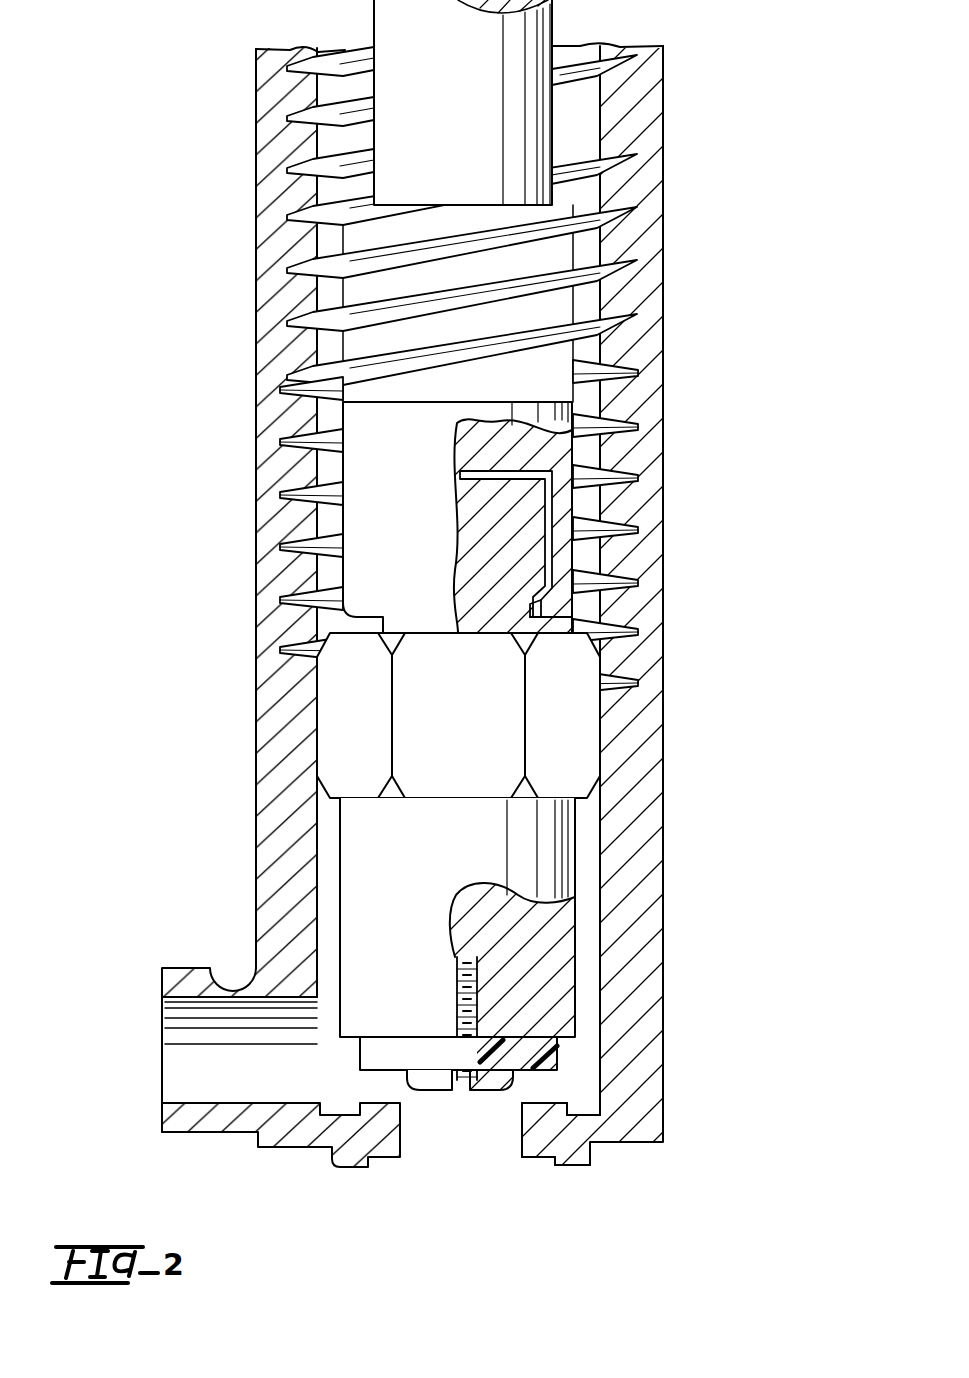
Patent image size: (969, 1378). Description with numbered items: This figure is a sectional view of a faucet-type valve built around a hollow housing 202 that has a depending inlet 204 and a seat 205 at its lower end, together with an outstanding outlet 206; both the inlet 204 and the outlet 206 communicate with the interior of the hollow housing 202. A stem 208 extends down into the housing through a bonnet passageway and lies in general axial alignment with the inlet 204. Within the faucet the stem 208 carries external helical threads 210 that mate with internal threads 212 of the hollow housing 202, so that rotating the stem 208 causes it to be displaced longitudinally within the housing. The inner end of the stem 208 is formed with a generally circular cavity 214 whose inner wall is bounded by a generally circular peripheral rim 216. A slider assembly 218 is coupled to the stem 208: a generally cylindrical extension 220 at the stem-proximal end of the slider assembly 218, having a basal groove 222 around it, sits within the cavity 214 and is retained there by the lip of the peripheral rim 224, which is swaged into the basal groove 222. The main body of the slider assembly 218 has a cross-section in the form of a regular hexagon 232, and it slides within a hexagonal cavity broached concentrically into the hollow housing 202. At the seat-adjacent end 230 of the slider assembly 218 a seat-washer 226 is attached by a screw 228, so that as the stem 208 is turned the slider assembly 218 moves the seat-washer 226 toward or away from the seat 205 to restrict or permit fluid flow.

The hollow housing 202 is at (519, 604).
The depending inlet 204 is at (507, 1225).
The seat 205 is at (652, 1096).
The outstanding outlet 206 is at (215, 1067).
The stem 208 is at (532, 102).
The external helical threads 210 is at (691, 581).
The internal threads 212 is at (544, 226).
The generally circular cavity 214 is at (617, 526).
The peripheral rim 216 is at (620, 542).
The slider assembly 218 is at (341, 917).
The cylindrical extension 220 is at (340, 508).
The basal groove 222 is at (656, 617).
The lip of the peripheral rim 224 is at (656, 572).
The seat-washer 226 is at (616, 981).
The screw 228 is at (444, 1174).
The seat-adjacent end 230 is at (334, 981).
The regular hexagon 232 is at (369, 692).